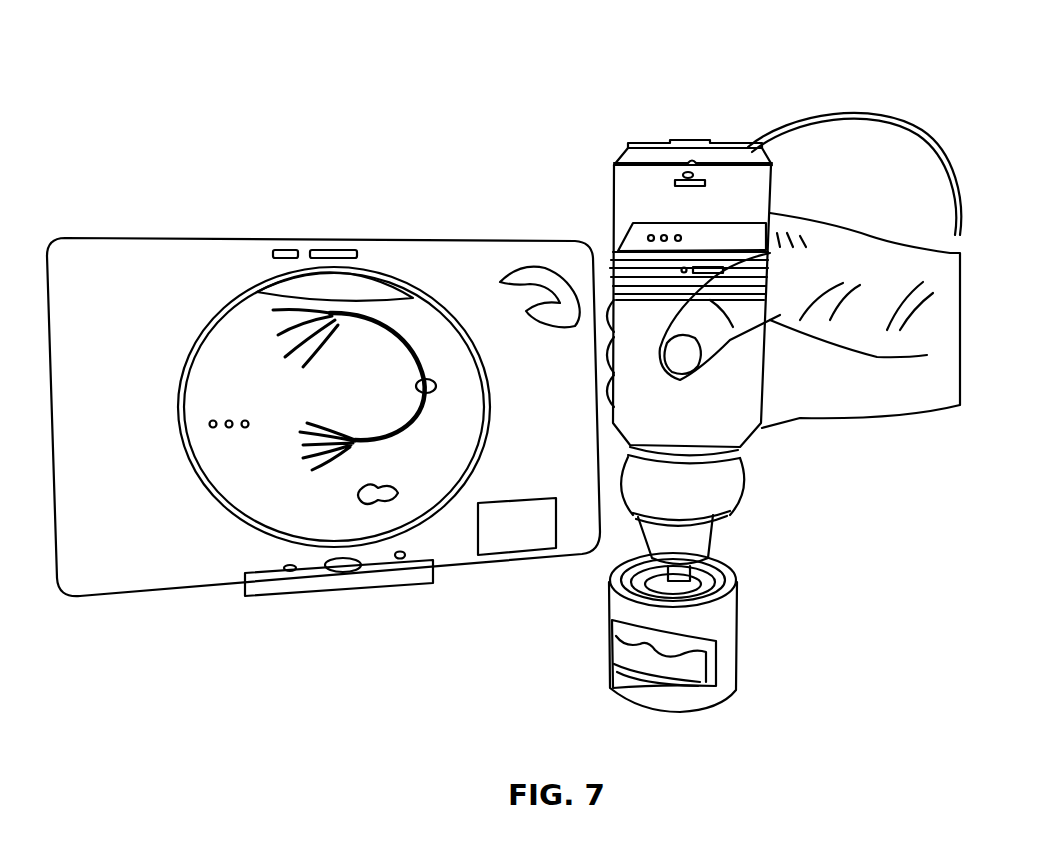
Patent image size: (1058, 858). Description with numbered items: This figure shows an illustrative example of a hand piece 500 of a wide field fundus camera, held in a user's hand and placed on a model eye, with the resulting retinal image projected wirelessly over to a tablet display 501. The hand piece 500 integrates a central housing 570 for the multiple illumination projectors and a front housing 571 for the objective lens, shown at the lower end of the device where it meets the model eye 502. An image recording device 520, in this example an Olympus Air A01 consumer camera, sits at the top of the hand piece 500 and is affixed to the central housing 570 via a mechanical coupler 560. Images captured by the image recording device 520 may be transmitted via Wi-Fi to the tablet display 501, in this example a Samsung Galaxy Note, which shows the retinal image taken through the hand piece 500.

The hand piece 500 is at (781, 308).
The tablet display 501 is at (358, 204).
The jar container 502 is at (643, 580).
The image recording device 520 is at (633, 147).
The mechanical coupler 560 is at (763, 357).
The central housing 570 is at (741, 468).
The front housing 571 is at (718, 542).